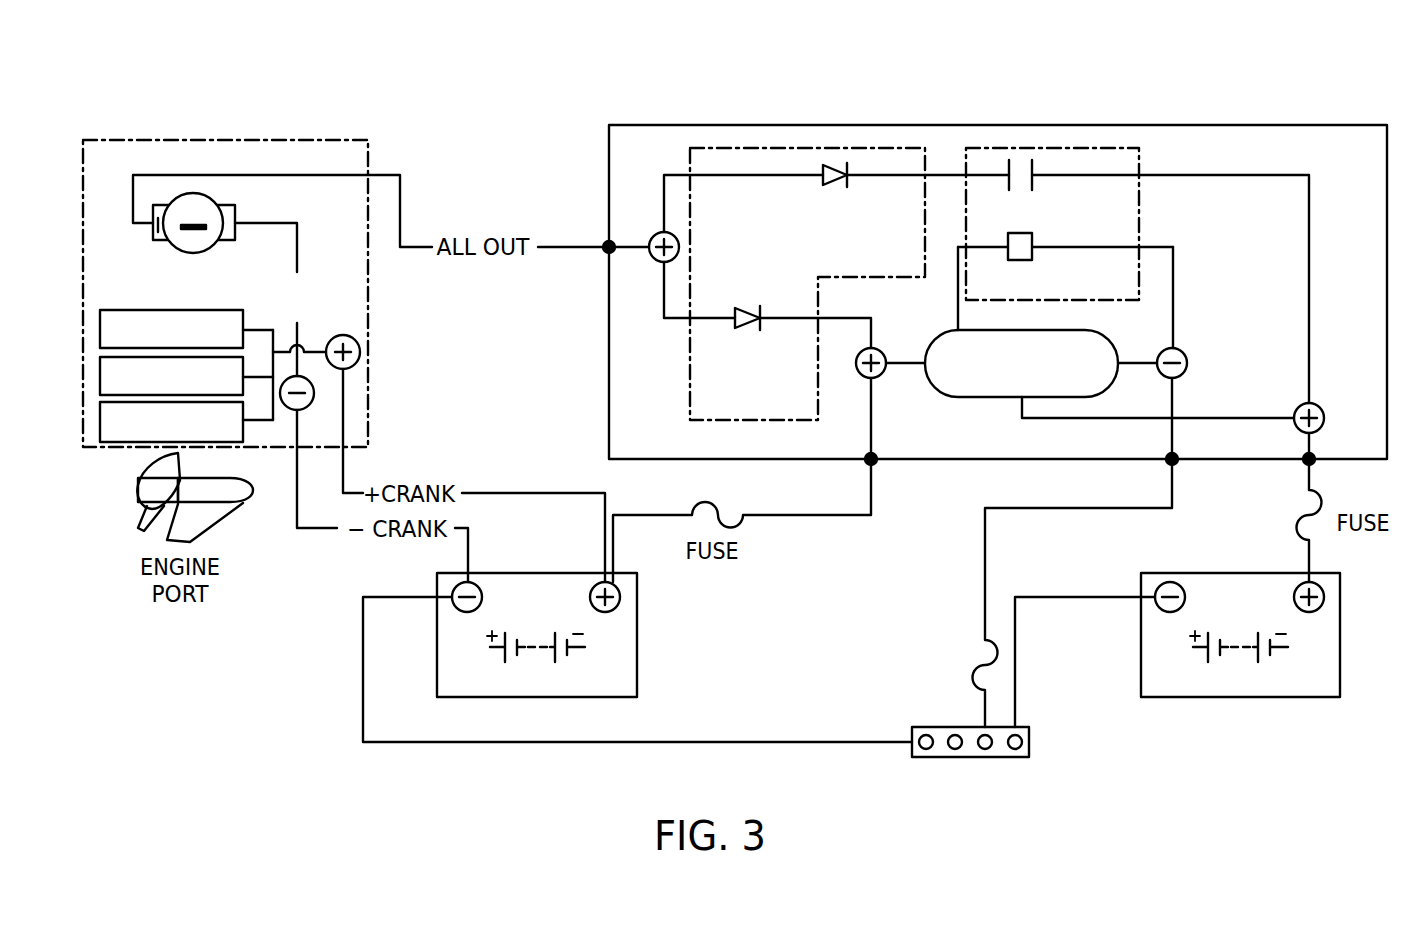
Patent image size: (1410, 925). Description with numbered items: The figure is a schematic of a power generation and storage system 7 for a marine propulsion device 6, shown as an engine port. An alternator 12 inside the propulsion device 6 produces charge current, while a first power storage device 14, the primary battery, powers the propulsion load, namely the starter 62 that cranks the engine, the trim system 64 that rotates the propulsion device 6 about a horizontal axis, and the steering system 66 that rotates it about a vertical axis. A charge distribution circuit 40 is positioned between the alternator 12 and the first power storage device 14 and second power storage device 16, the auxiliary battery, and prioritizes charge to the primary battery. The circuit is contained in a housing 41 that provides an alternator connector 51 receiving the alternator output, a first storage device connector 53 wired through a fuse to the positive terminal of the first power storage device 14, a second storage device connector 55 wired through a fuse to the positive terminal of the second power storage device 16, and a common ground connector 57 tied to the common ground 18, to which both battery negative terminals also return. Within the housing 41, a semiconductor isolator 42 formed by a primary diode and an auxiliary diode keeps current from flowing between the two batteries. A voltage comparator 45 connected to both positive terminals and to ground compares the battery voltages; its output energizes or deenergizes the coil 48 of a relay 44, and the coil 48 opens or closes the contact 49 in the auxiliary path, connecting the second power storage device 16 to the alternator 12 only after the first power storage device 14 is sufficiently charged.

The power generation and storage system 7 is at (920, 50).
The propulsion device 6 is at (222, 140).
The alternator 12 is at (237, 213).
The starter 62 is at (100, 330).
The trim system 64 is at (100, 377).
The steering system 66 is at (100, 420).
The first power storage device 14 is at (637, 635).
The second power storage device 16 is at (1340, 635).
The common ground 18 is at (1000, 757).
The charge distribution circuit 40 is at (1192, 125).
The housing 41 is at (805, 125).
The semiconductor isolator 42 is at (867, 148).
The relay 44 is at (1068, 182).
The voltage comparator 45 is at (990, 397).
The coil 48 is at (1032, 240).
The contact 49 is at (1018, 165).
The alternator connector 51 is at (609, 247).
The first storage device connector 53 is at (875, 462).
The second storage device connector 55 is at (1305, 462).
The common ground connector 57 is at (1168, 462).